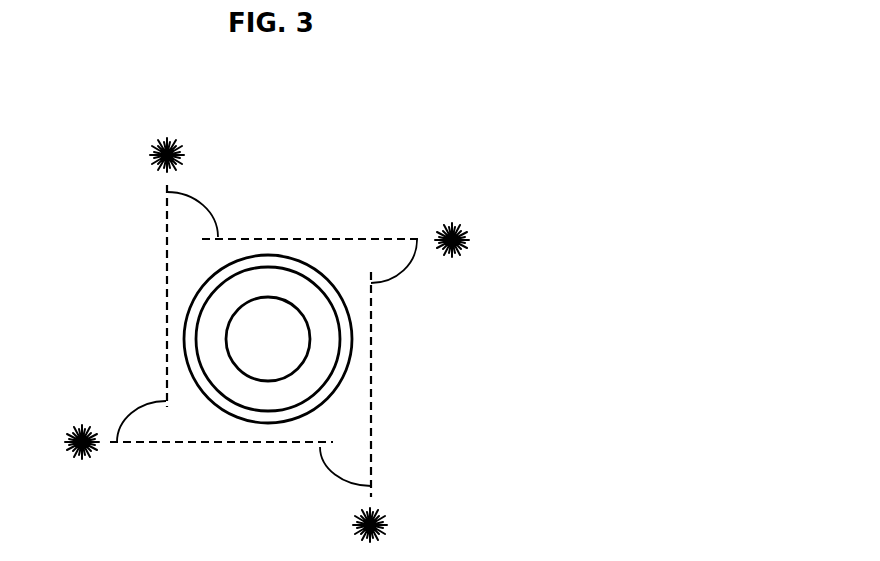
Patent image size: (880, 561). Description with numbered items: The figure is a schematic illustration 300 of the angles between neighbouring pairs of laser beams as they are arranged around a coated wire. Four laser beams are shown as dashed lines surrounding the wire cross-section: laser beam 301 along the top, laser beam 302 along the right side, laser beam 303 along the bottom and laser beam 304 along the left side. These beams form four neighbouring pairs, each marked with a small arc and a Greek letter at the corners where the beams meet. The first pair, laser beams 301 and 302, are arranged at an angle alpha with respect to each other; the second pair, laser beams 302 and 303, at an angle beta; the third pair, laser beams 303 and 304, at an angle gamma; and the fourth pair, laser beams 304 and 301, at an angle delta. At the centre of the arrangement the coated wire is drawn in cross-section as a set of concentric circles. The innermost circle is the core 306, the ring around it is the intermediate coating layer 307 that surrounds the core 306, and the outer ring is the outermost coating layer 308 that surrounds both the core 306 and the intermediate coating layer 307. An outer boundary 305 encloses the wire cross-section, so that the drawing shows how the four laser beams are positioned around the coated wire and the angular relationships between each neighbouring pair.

The optical fiber cross-section with beam alignment diagram 300 is at (753, 61).
The laser beam 301 is at (275, 238).
The laser beam 302 is at (371, 443).
The laser beam 303 is at (250, 443).
The laser beam 304 is at (166, 322).
The outer cladding / coating 305 is at (195, 297).
The core 306 is at (282, 338).
The intermediate coating layer 307 is at (303, 297).
The outermost coating layer 308 is at (222, 402).